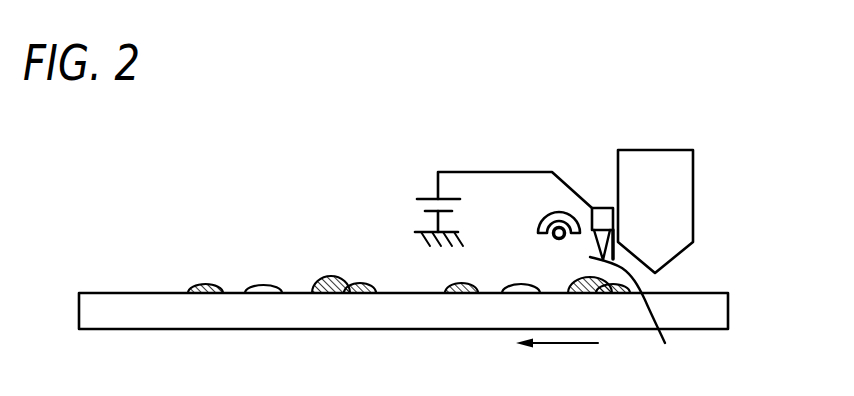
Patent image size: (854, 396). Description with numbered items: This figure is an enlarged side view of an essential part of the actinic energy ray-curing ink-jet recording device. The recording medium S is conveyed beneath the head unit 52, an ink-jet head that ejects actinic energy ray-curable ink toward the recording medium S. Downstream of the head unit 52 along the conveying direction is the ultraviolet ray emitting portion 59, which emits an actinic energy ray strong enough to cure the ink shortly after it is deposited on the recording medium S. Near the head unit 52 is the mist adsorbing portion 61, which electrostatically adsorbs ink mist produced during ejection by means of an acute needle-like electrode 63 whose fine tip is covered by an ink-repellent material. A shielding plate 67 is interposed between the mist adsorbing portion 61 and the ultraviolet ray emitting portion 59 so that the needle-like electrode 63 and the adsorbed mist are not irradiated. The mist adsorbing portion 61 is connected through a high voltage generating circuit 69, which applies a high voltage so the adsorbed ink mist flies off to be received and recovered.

The recording medium S is at (106, 292).
The head unit 52 is at (704, 153).
The ultraviolet ray emitting portion 59 is at (546, 217).
The mist adsorbing portion 61 is at (599, 200).
The needle-like electrode 63 is at (635, 316).
The shielding plate 67 is at (590, 257).
The high voltage generating circuit 69 is at (416, 202).